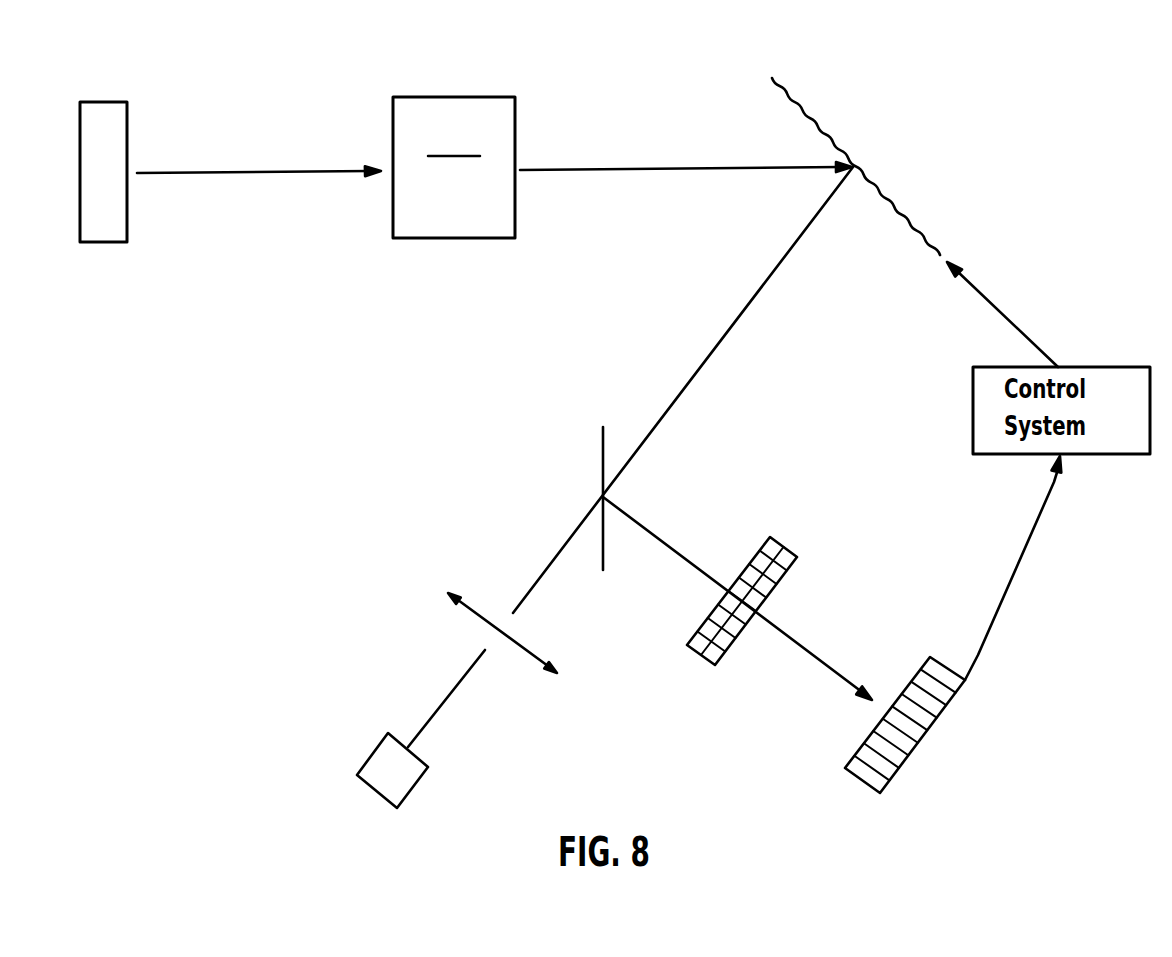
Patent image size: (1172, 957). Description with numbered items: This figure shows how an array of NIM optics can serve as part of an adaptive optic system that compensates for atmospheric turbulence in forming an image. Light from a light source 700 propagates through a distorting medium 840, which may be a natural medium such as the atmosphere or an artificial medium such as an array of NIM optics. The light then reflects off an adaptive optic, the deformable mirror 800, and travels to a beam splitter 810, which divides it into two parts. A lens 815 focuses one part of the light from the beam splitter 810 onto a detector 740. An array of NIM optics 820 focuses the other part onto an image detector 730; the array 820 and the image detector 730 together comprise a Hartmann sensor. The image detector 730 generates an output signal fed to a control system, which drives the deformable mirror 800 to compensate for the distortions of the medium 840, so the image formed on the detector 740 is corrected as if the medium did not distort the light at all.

The light source 700 is at (102, 100).
The distorting medium 840 is at (454, 167).
The deformable mirror 800 is at (772, 78).
The beam splitter 810 is at (600, 437).
The lens 815 is at (446, 590).
The detector 740 is at (365, 760).
The array of NIM optics 820 is at (770, 537).
The image detector 730 is at (880, 793).